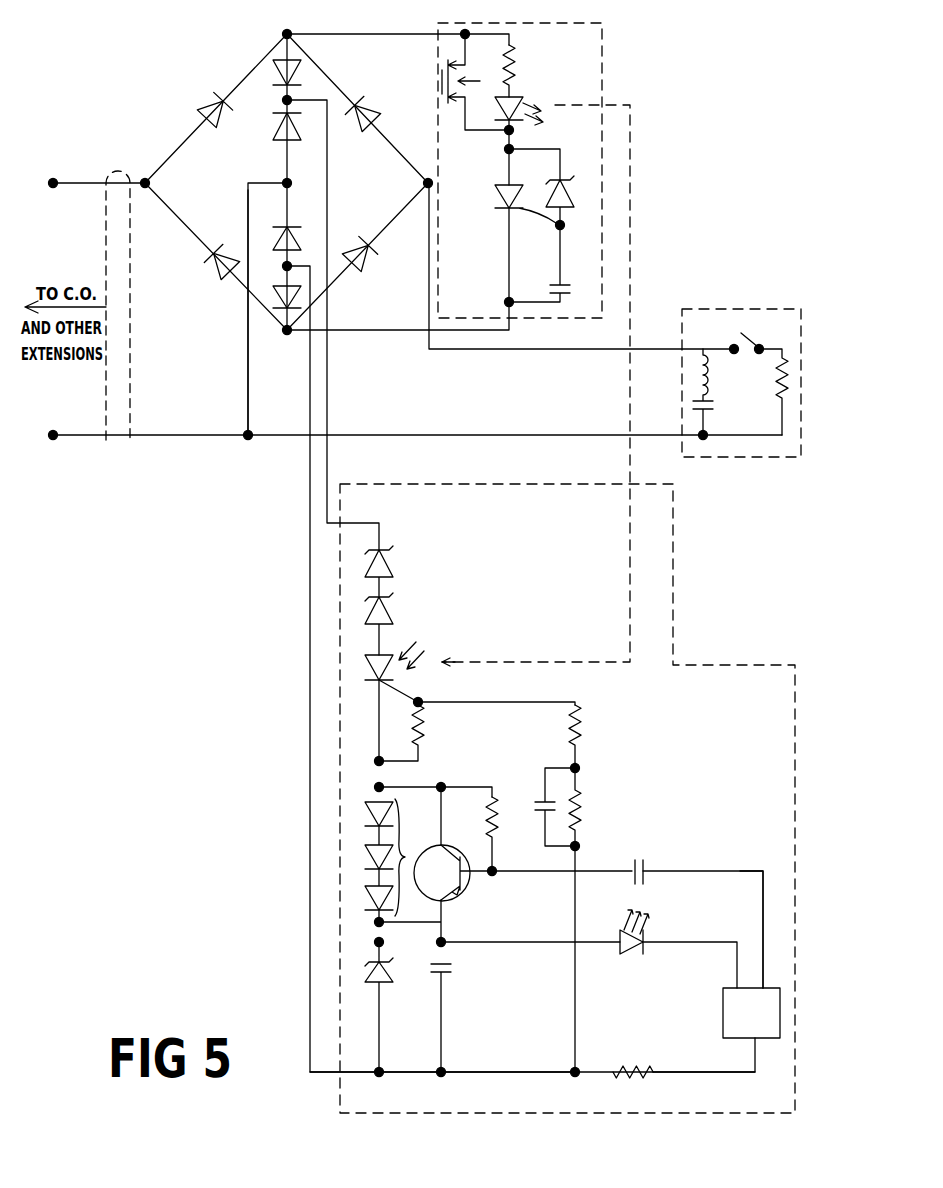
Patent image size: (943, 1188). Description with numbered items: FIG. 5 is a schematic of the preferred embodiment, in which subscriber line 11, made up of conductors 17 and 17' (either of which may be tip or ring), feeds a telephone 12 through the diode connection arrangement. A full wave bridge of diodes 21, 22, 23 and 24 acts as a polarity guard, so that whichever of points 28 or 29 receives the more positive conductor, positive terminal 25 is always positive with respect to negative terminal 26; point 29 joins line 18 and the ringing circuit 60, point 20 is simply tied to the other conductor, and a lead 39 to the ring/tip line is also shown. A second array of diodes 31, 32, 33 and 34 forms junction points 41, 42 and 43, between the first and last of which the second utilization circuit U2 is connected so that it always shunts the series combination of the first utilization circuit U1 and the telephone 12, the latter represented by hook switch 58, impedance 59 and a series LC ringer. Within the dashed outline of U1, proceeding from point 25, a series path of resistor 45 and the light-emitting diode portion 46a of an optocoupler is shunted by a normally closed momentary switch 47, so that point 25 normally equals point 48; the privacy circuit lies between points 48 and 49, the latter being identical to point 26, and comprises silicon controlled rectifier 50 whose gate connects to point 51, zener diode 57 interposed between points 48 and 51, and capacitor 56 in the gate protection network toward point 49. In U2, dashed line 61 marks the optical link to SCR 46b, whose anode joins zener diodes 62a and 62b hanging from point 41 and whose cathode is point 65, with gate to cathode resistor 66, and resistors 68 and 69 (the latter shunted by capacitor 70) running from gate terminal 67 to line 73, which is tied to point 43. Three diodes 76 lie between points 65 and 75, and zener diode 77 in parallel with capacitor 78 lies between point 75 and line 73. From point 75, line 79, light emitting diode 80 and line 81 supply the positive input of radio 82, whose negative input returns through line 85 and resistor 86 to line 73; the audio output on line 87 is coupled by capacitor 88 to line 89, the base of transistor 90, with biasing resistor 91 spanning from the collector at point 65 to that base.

The subscriber line 11 is at (124, 441).
The telephone 12 is at (737, 460).
The conductor 17 is at (67, 179).
The conductor 17' is at (69, 437).
The line 18 is at (664, 349).
The point 20 is at (252, 440).
The diode 21 is at (210, 101).
The diode 22 is at (356, 110).
The diode 23 is at (364, 258).
The diode 24 is at (217, 273).
The positive terminal 25 is at (282, 34).
The negative terminal 26 is at (290, 337).
The point 28 is at (152, 183).
The point 29 is at (423, 183).
The diode 31 is at (296, 72).
The diode 32 is at (275, 133).
The diode 33 is at (297, 238).
The diode 34 is at (274, 295).
The lead to ring/tip line 39 is at (247, 382).
The junction point 41 is at (281, 100).
The junction point 42 is at (292, 183).
The junction point 43 is at (293, 266).
The resistor 45 is at (515, 57).
The light-emitting diode portion 46a is at (522, 101).
The SCR 46b is at (372, 668).
The normally closed momentary switch 47 is at (468, 106).
The point 48 is at (513, 152).
The point 49 is at (503, 302).
The silicon controlled rectifier 50 is at (501, 196).
The point 51 is at (565, 229).
The capacitor 56 is at (568, 292).
The zener diode 57 is at (567, 180).
The hook switch 58 is at (750, 326).
The impedance 59 is at (781, 404).
The ringing circuit 60 is at (663, 404).
The dashed line 61 is at (633, 192).
The zener diode 62a is at (393, 560).
The zener diode 62b is at (393, 607).
The point 65 is at (384, 784).
The gate to cathode resistor 66 is at (424, 735).
The gate terminal 67 is at (410, 700).
The resistor 68 is at (582, 735).
The resistor 69 is at (581, 838).
The capacitor 70 is at (541, 800).
The line 73 is at (320, 1076).
The point 75 is at (375, 944).
The diodes 76 is at (400, 860).
The zener diode 77 is at (384, 983).
The capacitor 78 is at (453, 973).
The line 79 is at (562, 941).
The light emitting diode 80 is at (620, 949).
The line 81 is at (732, 941).
The radio 82 is at (722, 1012).
The line 85 is at (716, 1076).
The resistor 86 is at (636, 1068).
The line 87 is at (762, 872).
The capacitor 88 is at (638, 858).
The line 89 is at (536, 878).
The transistor 90 is at (470, 860).
The biasing resistor 91 is at (499, 834).
The first utilization circuit U1 is at (612, 56).
The second utilization circuit U2 is at (686, 568).